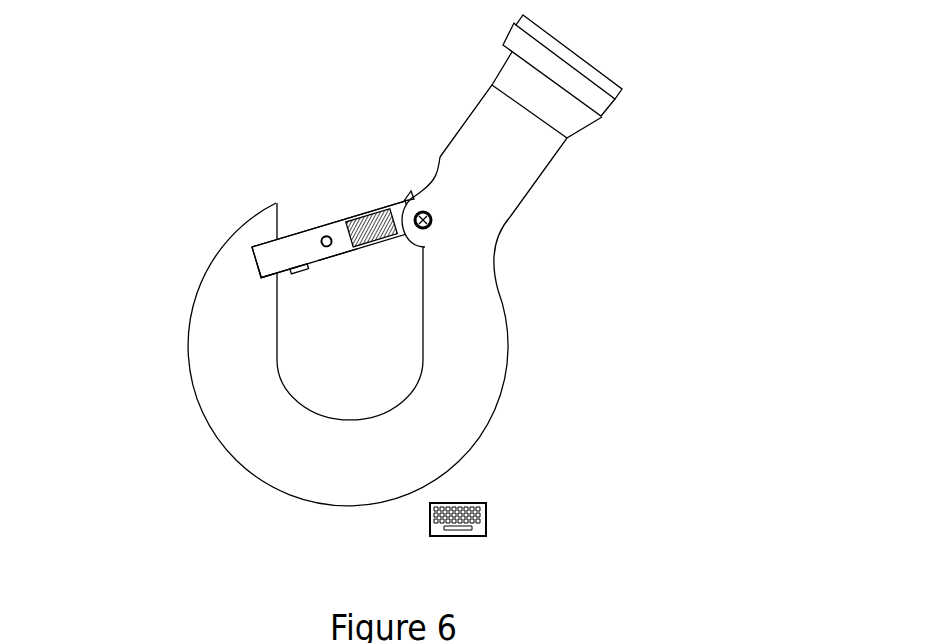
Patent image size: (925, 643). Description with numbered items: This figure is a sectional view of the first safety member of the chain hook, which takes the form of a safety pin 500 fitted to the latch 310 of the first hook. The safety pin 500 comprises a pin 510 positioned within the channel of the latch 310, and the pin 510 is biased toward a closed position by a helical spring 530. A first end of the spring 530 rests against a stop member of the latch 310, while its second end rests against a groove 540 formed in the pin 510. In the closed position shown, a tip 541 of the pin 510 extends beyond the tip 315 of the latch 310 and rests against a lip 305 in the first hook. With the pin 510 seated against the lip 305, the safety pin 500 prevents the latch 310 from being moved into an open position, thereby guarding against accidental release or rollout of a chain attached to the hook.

The lip 305 is at (268, 296).
The latch 310 is at (303, 227).
The tip of the latch 315 is at (283, 246).
The safety pin 500 is at (323, 224).
The pin 510 is at (318, 257).
The helical spring 530 is at (362, 229).
The groove 540 is at (344, 251).
The tip of the pin 541 is at (260, 270).